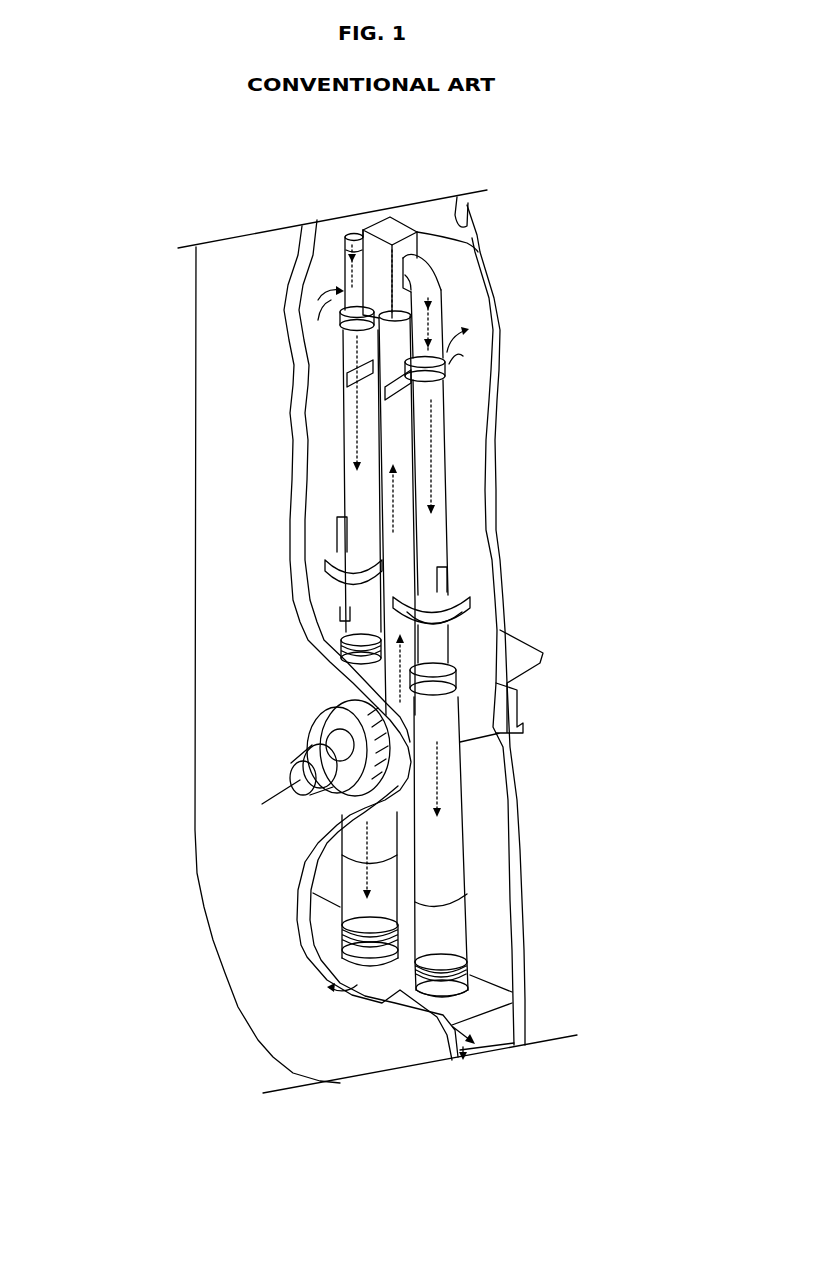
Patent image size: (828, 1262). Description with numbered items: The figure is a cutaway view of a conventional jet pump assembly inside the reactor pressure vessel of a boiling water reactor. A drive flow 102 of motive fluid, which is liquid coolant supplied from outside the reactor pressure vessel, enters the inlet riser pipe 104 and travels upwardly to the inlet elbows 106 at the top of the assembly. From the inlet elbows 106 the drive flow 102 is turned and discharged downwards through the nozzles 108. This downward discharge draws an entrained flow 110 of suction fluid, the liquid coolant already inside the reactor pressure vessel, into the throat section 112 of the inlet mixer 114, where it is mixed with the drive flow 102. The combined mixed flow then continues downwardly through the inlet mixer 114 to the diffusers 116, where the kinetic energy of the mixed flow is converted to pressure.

The drive flow 102 is at (238, 825).
The inlet riser pipe 104 is at (405, 437).
The inlet elbows 106 is at (427, 274).
The nozzles 108 is at (443, 343).
The entrained flow 110 is at (303, 302).
The throat section 112 is at (443, 372).
The inlet mixer 114 is at (445, 495).
The diffusers 116 is at (443, 848).